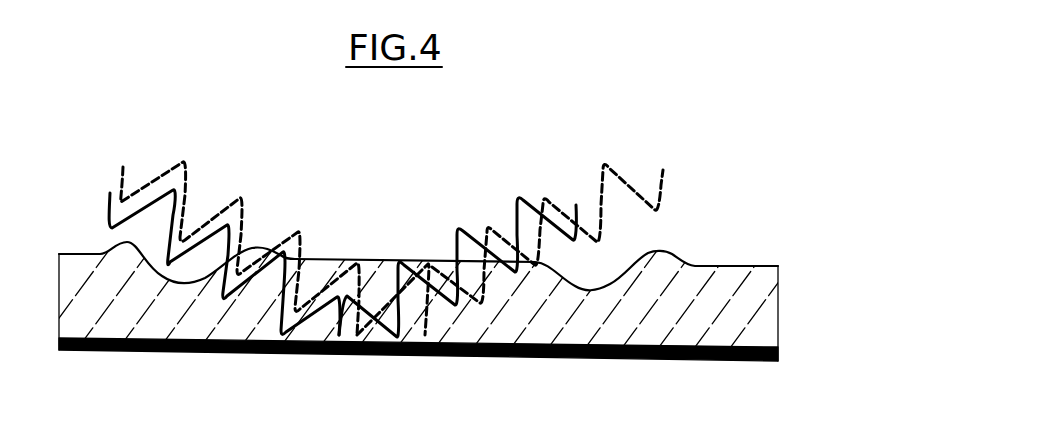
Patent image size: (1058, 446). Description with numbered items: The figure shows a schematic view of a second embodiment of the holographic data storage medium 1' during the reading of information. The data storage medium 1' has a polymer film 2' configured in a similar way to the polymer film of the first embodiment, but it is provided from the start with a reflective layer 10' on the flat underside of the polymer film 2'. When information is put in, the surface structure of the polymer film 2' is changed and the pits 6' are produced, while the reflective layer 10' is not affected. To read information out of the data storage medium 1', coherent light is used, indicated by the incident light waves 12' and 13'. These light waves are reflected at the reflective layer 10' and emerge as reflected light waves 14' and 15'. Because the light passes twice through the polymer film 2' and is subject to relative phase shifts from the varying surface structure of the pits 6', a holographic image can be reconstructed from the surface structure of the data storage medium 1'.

The data storage medium 1' is at (175, 69).
The polymer film 2' is at (456, 299).
The pits 6' is at (418, 233).
The reflective layer 10' is at (418, 378).
The incident light wave 12' is at (197, 250).
The incident light wave 13' is at (240, 232).
The reflected light wave 14' is at (457, 219).
The reflected light wave 15' is at (567, 220).